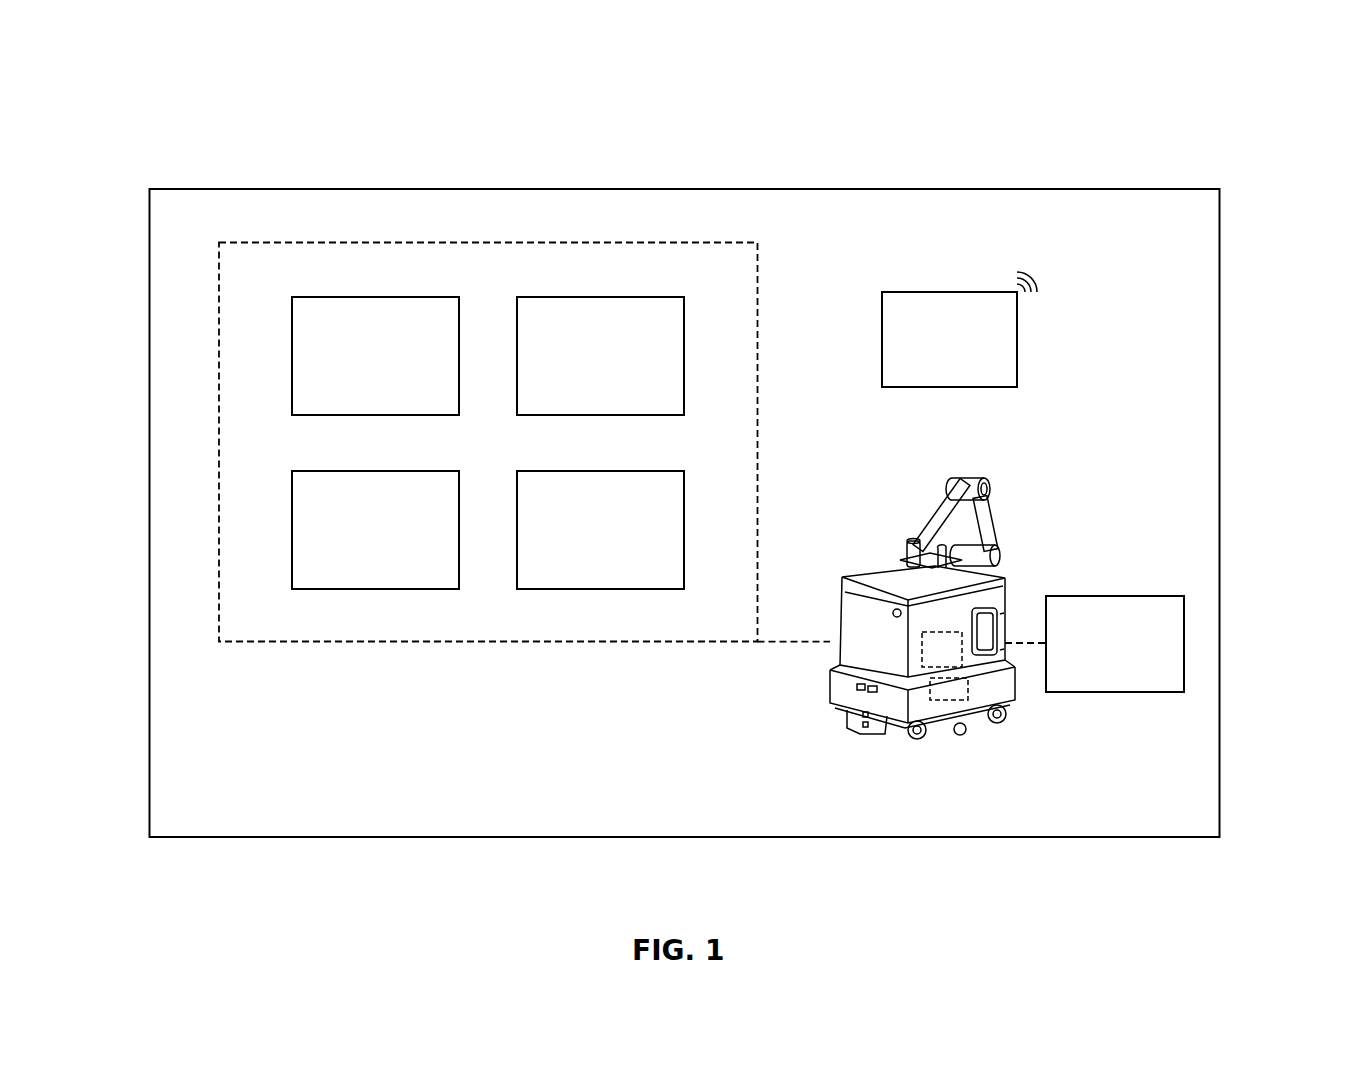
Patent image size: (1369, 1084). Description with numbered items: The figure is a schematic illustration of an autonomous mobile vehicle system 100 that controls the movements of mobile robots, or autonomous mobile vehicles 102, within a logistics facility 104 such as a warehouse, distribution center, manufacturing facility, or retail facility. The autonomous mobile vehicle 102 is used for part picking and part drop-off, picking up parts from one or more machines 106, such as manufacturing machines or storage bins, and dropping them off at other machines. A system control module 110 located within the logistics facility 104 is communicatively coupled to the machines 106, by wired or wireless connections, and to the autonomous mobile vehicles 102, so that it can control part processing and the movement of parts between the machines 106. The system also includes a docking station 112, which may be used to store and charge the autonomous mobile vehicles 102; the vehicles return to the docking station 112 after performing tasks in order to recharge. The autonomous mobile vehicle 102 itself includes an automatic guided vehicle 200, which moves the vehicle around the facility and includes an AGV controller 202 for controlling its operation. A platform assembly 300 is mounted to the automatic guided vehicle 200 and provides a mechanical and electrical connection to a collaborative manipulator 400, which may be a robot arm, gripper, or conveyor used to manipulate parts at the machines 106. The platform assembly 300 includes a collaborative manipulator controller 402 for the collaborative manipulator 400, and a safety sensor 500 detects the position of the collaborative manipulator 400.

The autonomous mobile vehicle system 100 is at (401, 81).
The autonomous mobile vehicle 102 is at (1036, 513).
The logistics facility 104 is at (1093, 181).
The machines 106 is at (685, 355).
The system control module 110 is at (948, 290).
The docking station 112 is at (1116, 594).
The automatic guided vehicle (AGV) 200 is at (892, 737).
The AGV controller 202 is at (959, 697).
The platform assembly 300 is at (873, 653).
The collaborative manipulator 400 is at (1001, 480).
The collaborative manipulator controller 402 is at (955, 659).
The safety sensor 500 is at (1010, 582).